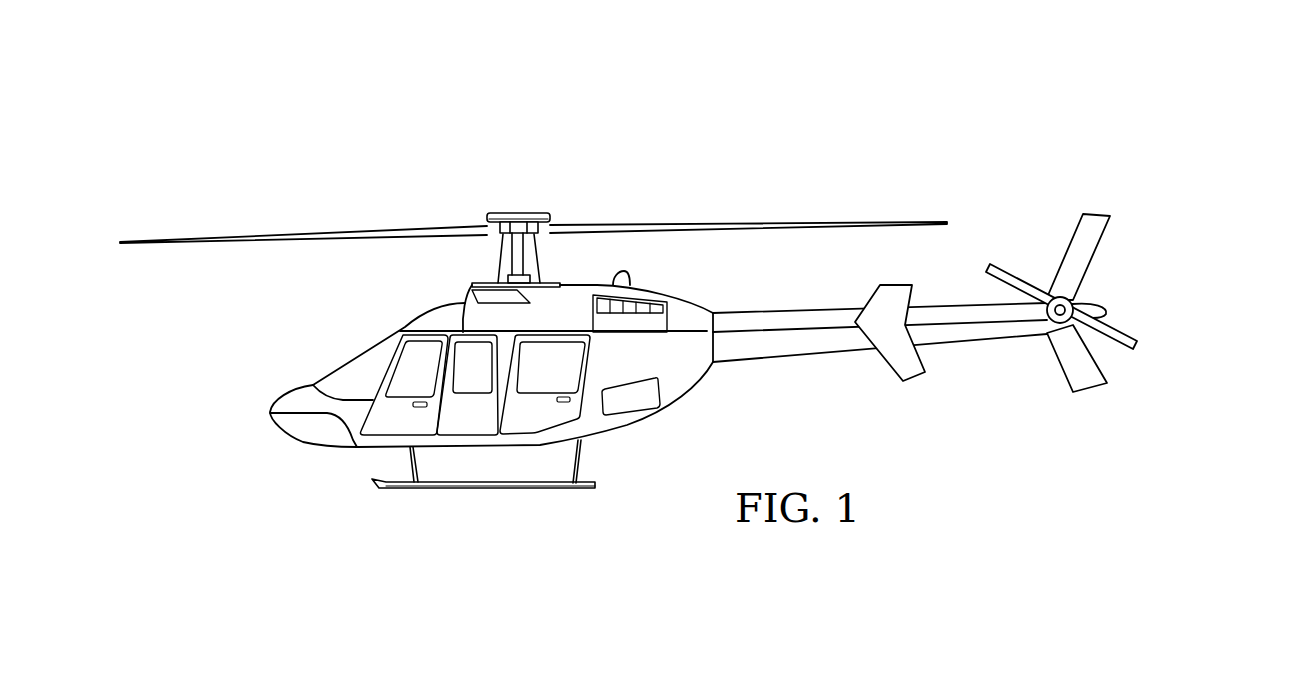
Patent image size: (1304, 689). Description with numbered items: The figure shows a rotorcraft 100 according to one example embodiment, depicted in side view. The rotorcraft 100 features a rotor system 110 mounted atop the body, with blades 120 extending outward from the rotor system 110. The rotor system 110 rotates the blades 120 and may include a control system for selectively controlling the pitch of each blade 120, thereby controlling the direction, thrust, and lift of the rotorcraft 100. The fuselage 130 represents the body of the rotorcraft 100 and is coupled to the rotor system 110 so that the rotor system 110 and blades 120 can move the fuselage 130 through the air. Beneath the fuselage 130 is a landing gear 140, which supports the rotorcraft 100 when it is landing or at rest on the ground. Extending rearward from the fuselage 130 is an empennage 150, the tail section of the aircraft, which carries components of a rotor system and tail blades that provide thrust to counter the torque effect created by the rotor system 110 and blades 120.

The rotorcraft 100 is at (285, 106).
The rotor system 110 is at (516, 212).
The blades 120 is at (833, 222).
The fuselage 130 is at (313, 445).
The landing gear 140 is at (447, 490).
The empennage 150 is at (803, 356).